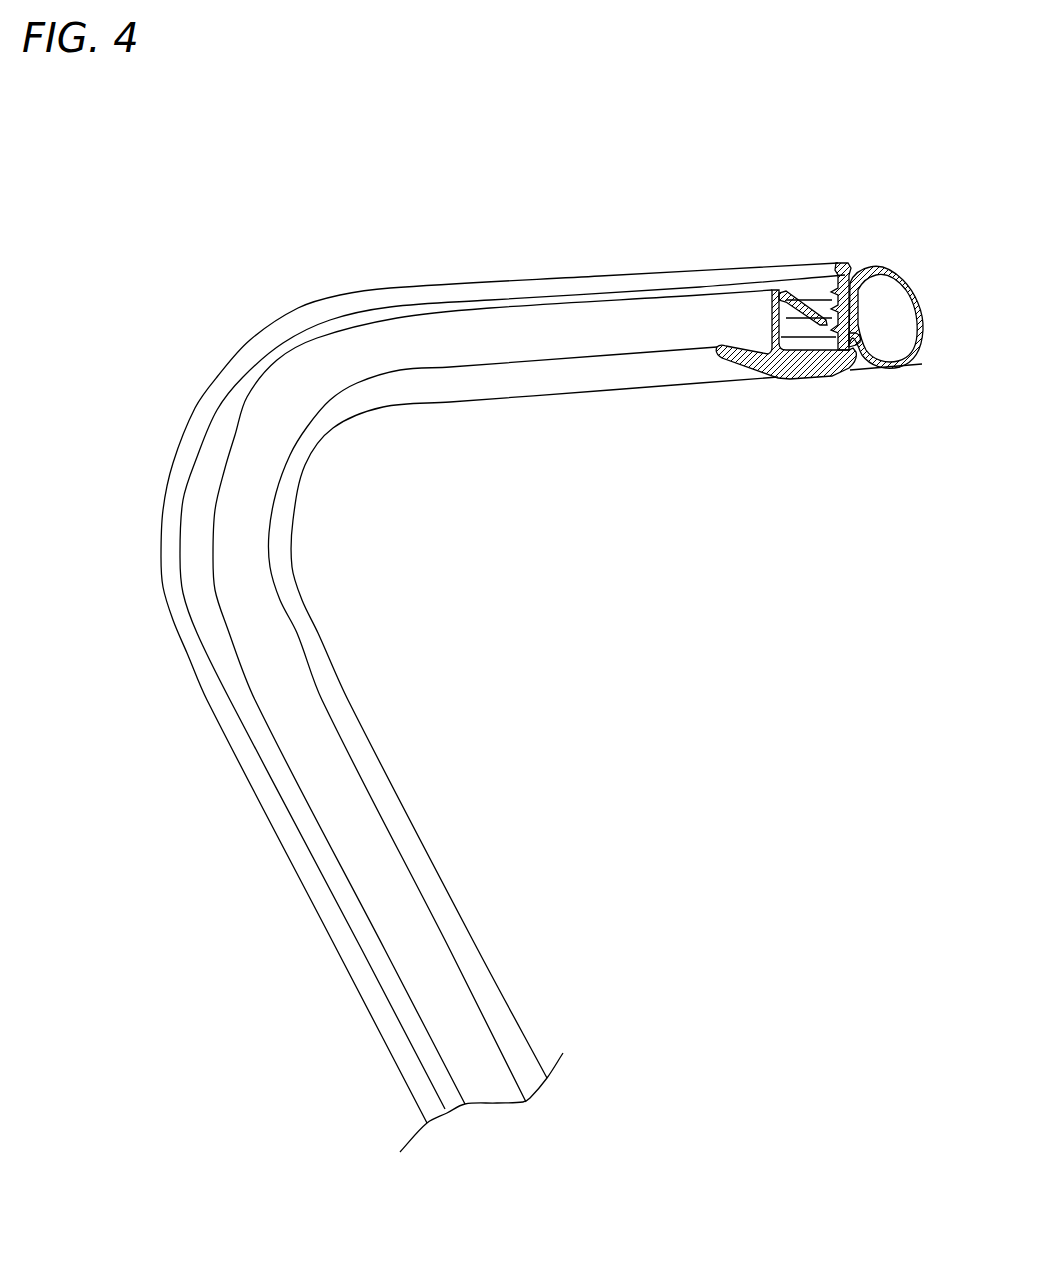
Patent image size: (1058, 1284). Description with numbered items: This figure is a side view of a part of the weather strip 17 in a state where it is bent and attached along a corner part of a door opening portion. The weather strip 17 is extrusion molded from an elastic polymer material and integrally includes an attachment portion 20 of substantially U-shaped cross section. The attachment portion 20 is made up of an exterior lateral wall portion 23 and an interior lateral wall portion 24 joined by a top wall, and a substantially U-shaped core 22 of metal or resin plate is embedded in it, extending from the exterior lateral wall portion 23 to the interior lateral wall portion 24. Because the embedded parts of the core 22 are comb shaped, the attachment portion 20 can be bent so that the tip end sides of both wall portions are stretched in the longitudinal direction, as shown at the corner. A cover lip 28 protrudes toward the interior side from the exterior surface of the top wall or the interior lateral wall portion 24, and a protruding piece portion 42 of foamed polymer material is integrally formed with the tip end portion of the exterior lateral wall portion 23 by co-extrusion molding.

The weather strip 17 is at (460, 274).
The attachment portion 20 is at (298, 308).
The core 22 is at (818, 375).
The exterior lateral wall portion 23 is at (257, 388).
The interior lateral wall portion 24 is at (367, 357).
The cover lip 28 is at (540, 378).
The protruding piece portion 42 is at (198, 429).